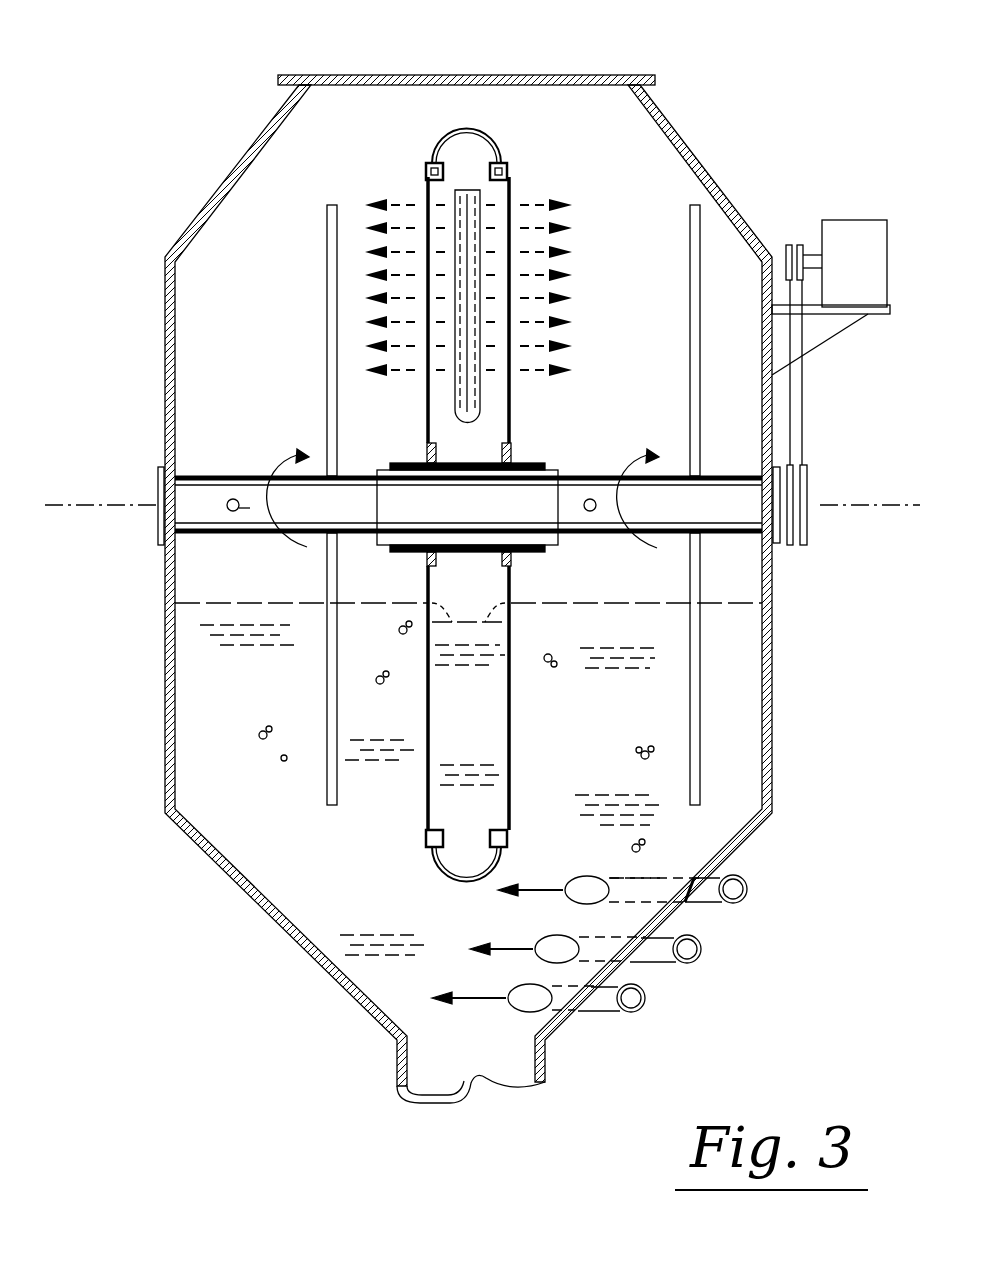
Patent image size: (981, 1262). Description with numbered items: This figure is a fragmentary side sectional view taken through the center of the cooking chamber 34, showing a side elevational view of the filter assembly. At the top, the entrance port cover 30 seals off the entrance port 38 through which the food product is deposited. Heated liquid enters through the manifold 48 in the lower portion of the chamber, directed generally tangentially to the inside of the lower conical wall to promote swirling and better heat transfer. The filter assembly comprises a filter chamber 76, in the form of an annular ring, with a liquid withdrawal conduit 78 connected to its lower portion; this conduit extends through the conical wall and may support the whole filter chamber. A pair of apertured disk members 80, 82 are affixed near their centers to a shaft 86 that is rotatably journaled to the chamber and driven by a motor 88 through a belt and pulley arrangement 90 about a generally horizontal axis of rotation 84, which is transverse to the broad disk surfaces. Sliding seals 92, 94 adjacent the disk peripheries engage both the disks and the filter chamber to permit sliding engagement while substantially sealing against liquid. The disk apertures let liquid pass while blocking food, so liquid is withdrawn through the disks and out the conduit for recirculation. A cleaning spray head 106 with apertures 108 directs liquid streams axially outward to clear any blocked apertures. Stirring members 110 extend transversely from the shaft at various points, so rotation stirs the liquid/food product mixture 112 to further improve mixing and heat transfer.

The entrance port cover 30 is at (458, 75).
The cooking chamber 34 is at (688, 140).
The entrance port 38 is at (357, 86).
The manifold 48 is at (748, 895).
The filter chamber 76 is at (482, 128).
The liquid withdrawal conduit 78 is at (458, 880).
The disk member 80 is at (426, 190).
The disk member 82 is at (512, 196).
The axis of rotation 84 is at (75, 505).
The shaft 86 is at (218, 476).
The motor 88 is at (840, 220).
The belt and pulley arrangement 90 is at (805, 470).
The sliding seal 92 is at (432, 163).
The sliding seal 94 is at (505, 163).
The ultraviolet lamp 106 is at (472, 416).
The aperture 108 is at (460, 255).
The stirring members 110 is at (330, 355).
The liquid/food product mixture 112 is at (725, 603).